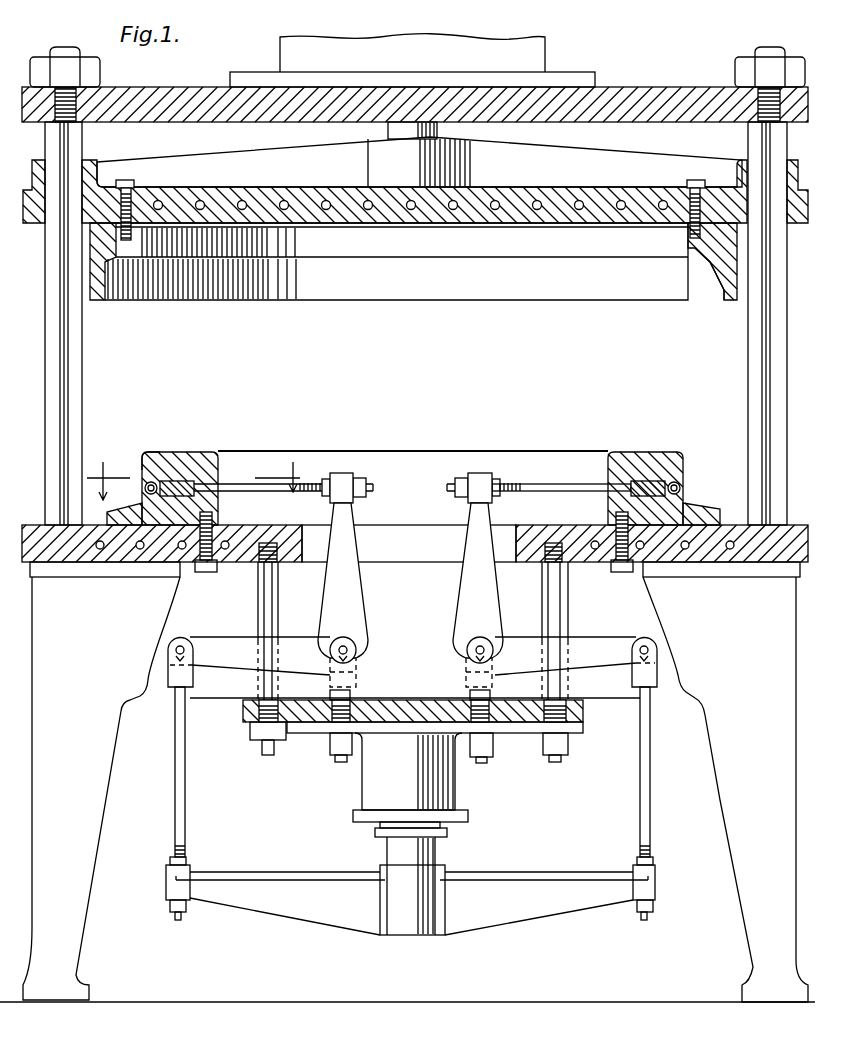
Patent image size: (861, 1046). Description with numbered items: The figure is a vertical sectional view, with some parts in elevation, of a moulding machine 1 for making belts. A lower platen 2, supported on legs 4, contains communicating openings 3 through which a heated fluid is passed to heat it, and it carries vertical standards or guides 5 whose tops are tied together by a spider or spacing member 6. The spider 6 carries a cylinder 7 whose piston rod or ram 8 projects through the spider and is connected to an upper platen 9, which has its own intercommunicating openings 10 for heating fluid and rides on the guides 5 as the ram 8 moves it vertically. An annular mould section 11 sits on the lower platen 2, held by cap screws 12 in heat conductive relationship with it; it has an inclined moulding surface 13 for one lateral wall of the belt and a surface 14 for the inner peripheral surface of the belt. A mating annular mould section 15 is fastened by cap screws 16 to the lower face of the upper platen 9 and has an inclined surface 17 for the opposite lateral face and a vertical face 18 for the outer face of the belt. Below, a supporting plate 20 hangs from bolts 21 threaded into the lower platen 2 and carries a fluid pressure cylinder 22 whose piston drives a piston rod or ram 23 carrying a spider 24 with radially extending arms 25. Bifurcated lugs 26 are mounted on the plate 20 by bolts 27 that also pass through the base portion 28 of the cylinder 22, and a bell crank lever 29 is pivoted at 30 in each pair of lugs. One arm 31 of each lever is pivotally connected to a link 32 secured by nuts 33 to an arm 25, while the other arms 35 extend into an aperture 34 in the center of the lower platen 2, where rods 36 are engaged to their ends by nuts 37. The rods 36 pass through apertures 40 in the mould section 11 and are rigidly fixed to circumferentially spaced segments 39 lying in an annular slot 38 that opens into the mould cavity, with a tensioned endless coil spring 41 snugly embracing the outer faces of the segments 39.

The moulding machine 1 is at (606, 70).
The lower platen 2 is at (718, 570).
The communicating openings 3 is at (140, 548).
The legs 4 is at (88, 840).
The standards or guides 5 is at (752, 346).
The spider or spacing member 6 is at (650, 90).
The cylinder 7 is at (547, 46).
The piston rod or ram 8 is at (410, 127).
The upper platen 9 is at (566, 205).
The intercommunicating openings 10 is at (612, 209).
The annular mould section 11 is at (200, 452).
The cap screws 12 is at (606, 565).
The inclined moulding surface 13 is at (125, 502).
The surface 14 is at (138, 460).
The mould section 15 is at (438, 300).
The cap screws 16 is at (690, 214).
The inclined surface 17 is at (698, 262).
The vertical face 18 is at (716, 250).
The supporting plate 20 is at (300, 722).
The bolts 21 is at (568, 608).
The fluid pressure cylinder 22 is at (445, 790).
The piston rod or ram 23 is at (437, 852).
The spider 24 is at (396, 917).
The radially extending arms 25 is at (530, 905).
The bifurcated lugs 26 is at (362, 674).
The bolts 27 is at (335, 724).
The base portion 28 is at (497, 735).
The bell crank lever 29 is at (358, 617).
The pivot 30 is at (353, 650).
The arm 31 is at (228, 640).
The link 32 is at (185, 768).
The nuts 33 is at (192, 868).
The aperture 34 is at (396, 535).
The arms 35 is at (352, 585).
The rods 36 is at (256, 492).
The nuts 37 is at (348, 470).
The annular slot 38 is at (652, 480).
The segments 39 is at (680, 486).
The apertures 40 is at (220, 470).
The endless coil spring 41 is at (162, 470).